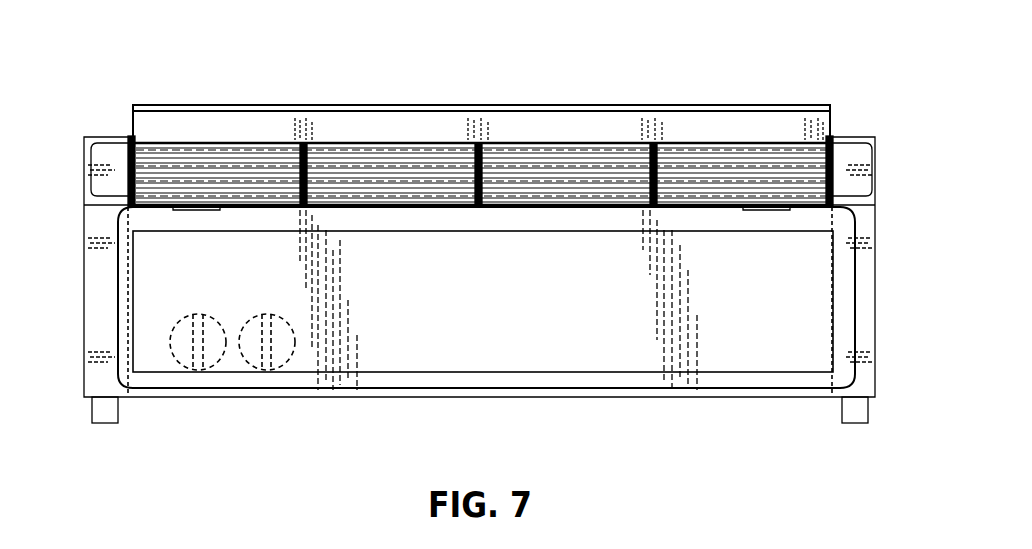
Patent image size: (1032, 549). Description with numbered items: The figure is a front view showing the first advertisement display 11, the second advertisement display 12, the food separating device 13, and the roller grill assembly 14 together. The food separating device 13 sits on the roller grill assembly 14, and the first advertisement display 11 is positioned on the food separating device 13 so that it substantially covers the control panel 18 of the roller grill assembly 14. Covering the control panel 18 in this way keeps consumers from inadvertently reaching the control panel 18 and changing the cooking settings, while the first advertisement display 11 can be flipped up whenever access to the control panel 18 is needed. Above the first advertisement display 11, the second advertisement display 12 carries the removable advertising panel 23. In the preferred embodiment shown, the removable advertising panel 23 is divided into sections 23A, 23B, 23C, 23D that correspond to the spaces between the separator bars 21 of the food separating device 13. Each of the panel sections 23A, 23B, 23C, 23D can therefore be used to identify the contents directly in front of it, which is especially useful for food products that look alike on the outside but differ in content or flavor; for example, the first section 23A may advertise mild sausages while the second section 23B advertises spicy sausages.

The first advertisement display 11 is at (830, 312).
The second advertisement display 12 is at (775, 102).
The food separating device 13 is at (855, 170).
The roller grill assembly 14 is at (72, 260).
The control panel 18 is at (298, 352).
The separator bars 21 is at (302, 150).
The removable advertising panel 23 is at (131, 124).
The first section 23A is at (172, 122).
The second section 23B is at (343, 123).
The third section 23C is at (517, 123).
The fourth section 23D is at (692, 123).